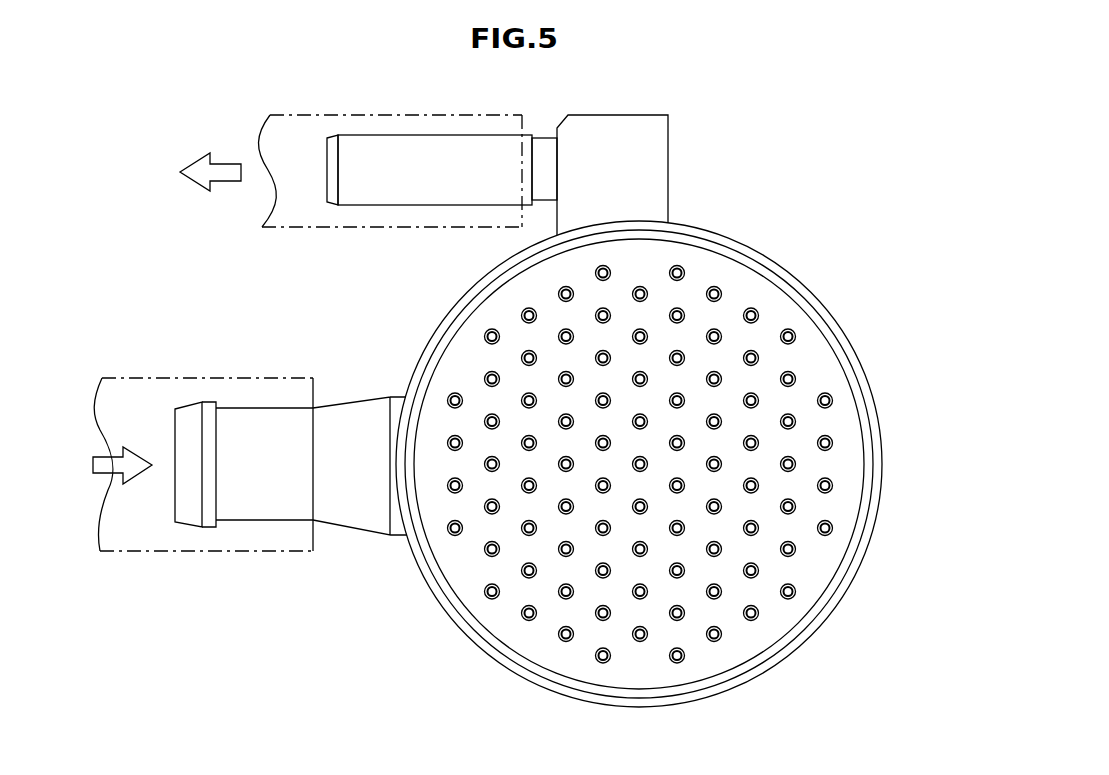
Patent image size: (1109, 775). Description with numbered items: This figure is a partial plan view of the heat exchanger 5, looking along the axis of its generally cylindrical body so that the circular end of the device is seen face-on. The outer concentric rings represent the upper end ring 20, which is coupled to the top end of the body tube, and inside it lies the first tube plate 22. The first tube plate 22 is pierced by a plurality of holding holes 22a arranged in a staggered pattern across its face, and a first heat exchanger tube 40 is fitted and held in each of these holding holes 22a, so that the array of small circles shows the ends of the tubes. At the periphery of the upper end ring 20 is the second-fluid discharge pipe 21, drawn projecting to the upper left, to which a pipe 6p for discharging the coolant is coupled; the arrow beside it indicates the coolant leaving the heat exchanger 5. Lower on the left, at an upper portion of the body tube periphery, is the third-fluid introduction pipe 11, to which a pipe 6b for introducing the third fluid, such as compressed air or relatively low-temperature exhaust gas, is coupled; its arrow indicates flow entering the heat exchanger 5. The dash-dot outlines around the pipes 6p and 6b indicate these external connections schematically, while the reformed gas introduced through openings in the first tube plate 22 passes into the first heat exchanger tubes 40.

The heat exchanger 5 is at (573, 402).
The first tube plate 22 is at (723, 272).
The upper end ring 20 is at (772, 261).
The holding hole 22a is at (488, 551).
The first heat exchanger tube 40 is at (487, 592).
The second-fluid discharge pipe 21 is at (396, 205).
The third-fluid introduction pipe 11 is at (250, 520).
The pipe 6p is at (305, 227).
The pipe 6b is at (162, 551).